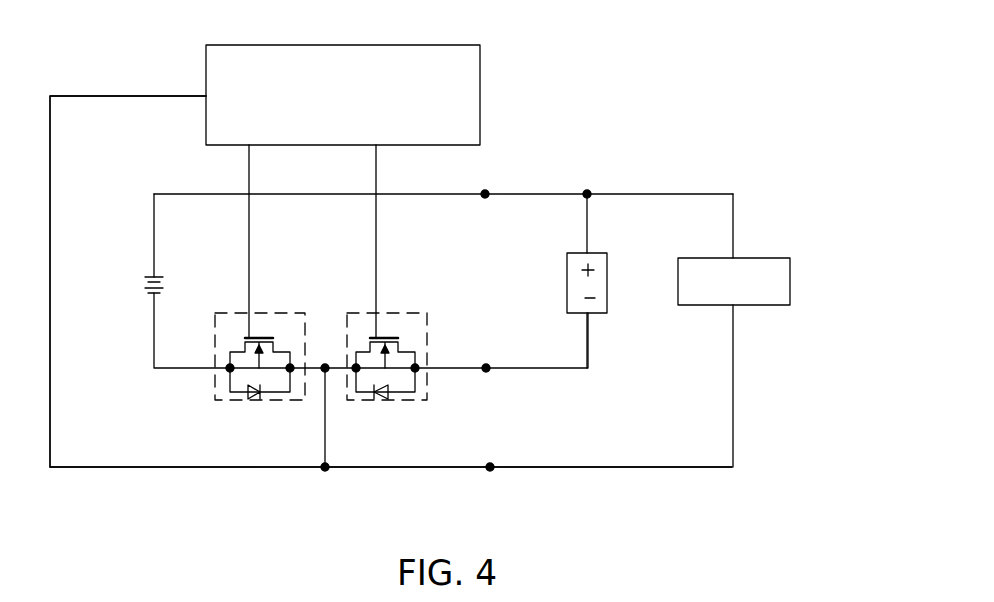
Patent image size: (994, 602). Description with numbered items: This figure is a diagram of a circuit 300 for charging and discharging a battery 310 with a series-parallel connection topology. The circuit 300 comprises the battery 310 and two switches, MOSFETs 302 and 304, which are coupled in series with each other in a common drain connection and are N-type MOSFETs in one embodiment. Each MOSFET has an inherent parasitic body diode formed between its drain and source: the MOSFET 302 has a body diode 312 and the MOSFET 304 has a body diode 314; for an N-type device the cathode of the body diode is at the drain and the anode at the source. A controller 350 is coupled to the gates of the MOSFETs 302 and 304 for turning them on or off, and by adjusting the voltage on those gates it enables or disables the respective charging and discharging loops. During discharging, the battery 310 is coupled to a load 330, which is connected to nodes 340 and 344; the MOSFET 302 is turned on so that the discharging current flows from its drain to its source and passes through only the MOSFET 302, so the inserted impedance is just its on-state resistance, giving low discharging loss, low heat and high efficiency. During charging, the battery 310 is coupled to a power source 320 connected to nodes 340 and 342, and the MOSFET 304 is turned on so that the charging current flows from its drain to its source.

The circuit 300 is at (705, 72).
The MOSFET 302 is at (274, 359).
The MOSFET 304 is at (409, 356).
The battery 310 is at (152, 273).
The body diode 312 is at (257, 393).
The body diode 314 is at (385, 394).
The power source 320 is at (598, 252).
The load 330 is at (743, 257).
The node 340 is at (485, 194).
The node 342 is at (486, 368).
The node 344 is at (490, 467).
The controller 350 is at (342, 44).